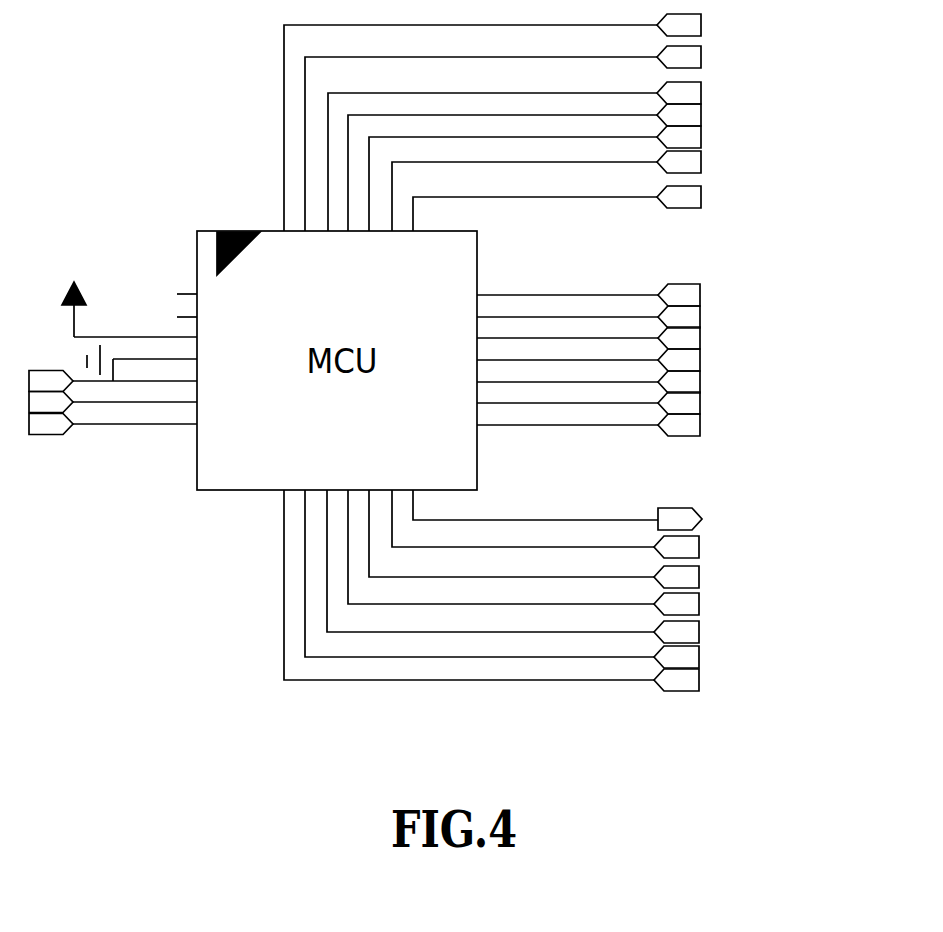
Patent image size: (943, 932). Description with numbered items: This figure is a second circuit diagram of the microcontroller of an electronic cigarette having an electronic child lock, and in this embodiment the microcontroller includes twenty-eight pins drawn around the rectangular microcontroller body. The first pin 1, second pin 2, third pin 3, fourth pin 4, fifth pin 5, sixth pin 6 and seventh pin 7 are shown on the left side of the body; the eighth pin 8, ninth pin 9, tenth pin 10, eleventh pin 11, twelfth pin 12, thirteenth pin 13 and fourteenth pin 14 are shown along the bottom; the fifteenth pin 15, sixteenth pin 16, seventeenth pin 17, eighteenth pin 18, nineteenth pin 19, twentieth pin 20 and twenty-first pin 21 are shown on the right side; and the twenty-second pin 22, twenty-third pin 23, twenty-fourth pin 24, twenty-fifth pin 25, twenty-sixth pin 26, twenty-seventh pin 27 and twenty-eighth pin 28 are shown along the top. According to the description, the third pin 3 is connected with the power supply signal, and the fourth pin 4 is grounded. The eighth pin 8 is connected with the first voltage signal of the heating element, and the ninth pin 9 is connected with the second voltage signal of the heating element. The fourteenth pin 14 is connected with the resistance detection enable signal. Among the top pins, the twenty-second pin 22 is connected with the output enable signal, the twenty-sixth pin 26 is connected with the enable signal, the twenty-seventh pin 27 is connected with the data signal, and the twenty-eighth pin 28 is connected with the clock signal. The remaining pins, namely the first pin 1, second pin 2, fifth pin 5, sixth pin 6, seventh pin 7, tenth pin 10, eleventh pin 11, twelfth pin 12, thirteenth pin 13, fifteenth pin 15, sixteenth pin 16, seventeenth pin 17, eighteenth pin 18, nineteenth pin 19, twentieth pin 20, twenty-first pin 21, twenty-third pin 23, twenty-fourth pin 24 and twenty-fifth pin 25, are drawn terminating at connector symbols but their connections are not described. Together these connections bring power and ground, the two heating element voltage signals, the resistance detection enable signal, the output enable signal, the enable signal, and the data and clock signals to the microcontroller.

The first pin 1 is at (187, 285).
The second pin 2 is at (187, 308).
The third pin 3 is at (128, 291).
The fourth pin 4 is at (142, 360).
The fifth pin 5 is at (113, 377).
The sixth pin 6 is at (113, 398).
The seventh pin 7 is at (113, 420).
The eighth pin 8 is at (537, 593).
The ninth pin 9 is at (543, 580).
The tenth pin 10 is at (513, 566).
The eleventh pin 11 is at (523, 552).
The twelfth pin 12 is at (534, 539).
The thirteenth pin 13 is at (545, 524).
The fourteenth pin 14 is at (628, 511).
The fifteenth pin 15 is at (588, 421).
The sixteenth pin 16 is at (588, 399).
The seventeenth pin 17 is at (588, 378).
The eighteenth pin 18 is at (588, 356).
The nineteenth pin 19 is at (588, 334).
The twentieth pin 20 is at (588, 313).
The twenty-first pin 21 is at (588, 291).
The twenty-second pin 22 is at (599, 208).
The twenty-third pin 23 is at (546, 191).
The twenty-fourth pin 24 is at (535, 178).
The twenty-fifth pin 25 is at (524, 167).
The twenty-sixth pin 26 is at (534, 155).
The twenty-seventh pin 27 is at (531, 137).
The twenty-eighth pin 28 is at (520, 121).